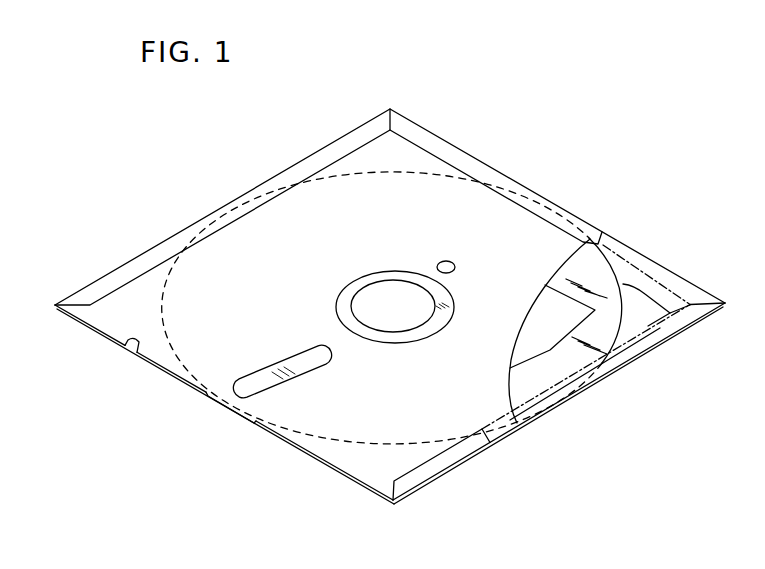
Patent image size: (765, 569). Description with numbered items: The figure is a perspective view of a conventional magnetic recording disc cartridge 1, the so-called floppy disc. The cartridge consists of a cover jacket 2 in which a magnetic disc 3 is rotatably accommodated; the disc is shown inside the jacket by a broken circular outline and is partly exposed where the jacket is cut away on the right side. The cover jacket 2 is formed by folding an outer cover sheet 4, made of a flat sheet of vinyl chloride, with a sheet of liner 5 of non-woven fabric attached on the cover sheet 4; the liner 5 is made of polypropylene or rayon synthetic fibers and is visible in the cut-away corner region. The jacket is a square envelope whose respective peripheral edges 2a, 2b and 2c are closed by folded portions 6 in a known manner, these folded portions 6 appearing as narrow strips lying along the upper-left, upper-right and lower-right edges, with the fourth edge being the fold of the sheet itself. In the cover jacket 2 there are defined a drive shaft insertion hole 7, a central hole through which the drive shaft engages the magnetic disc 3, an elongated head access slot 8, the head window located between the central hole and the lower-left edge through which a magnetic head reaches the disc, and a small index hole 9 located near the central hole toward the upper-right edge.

The magnetic recording disc cartridge 1 is at (138, 190).
The cover jacket 2 is at (357, 468).
The peripheral edge 2a is at (97, 278).
The peripheral edge 2b is at (532, 187).
The peripheral edge 2c is at (478, 458).
The magnetic disc 3 is at (580, 377).
The outer cover sheet 4 is at (105, 322).
The liner 5 is at (637, 323).
The folded portions 6 is at (317, 162).
The drive shaft insertion hole 7 is at (343, 297).
The head access slot 8 is at (232, 407).
The index hole 9 is at (452, 265).